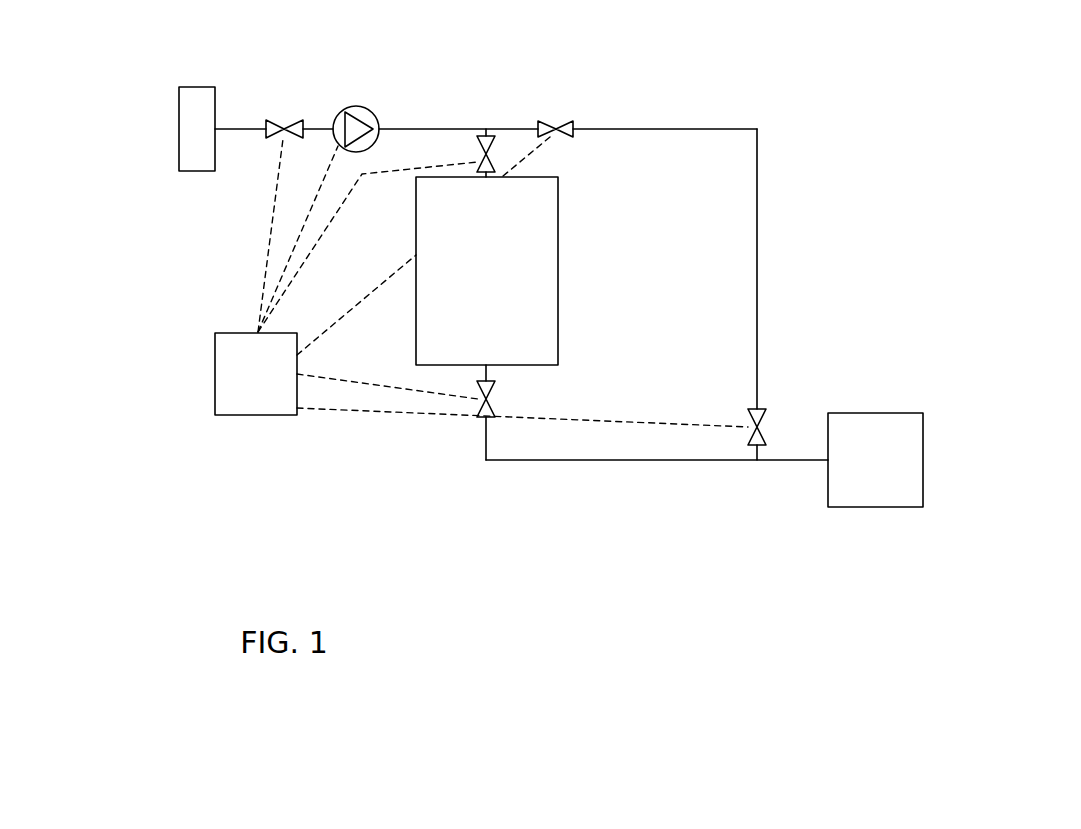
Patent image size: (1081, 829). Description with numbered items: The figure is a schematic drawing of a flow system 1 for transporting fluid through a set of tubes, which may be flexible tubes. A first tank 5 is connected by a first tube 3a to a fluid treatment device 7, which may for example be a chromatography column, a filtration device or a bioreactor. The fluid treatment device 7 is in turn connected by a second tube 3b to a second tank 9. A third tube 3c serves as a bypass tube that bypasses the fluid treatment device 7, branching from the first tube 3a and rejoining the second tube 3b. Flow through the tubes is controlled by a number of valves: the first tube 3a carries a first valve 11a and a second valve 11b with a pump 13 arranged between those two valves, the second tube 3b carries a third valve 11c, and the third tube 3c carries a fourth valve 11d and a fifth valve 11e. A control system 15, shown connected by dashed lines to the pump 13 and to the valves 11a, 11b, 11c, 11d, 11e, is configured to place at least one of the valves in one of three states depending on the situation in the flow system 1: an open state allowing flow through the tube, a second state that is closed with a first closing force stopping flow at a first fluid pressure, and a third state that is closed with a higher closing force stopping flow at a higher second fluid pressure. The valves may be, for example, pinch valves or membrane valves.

The flow system 1 is at (687, 88).
The first tube 3a is at (412, 127).
The second tube 3b is at (699, 460).
The third tube 3c is at (758, 196).
The first tank 5 is at (179, 129).
The fluid treatment device 7 is at (558, 288).
The second tank 9 is at (923, 439).
The first valve 11a is at (284, 128).
The second valve 11b is at (493, 158).
The third valve 11c is at (486, 399).
The fourth valve 11d is at (563, 127).
The fifth valve 11e is at (762, 412).
The pump 13 is at (350, 103).
The control system 15 is at (215, 398).